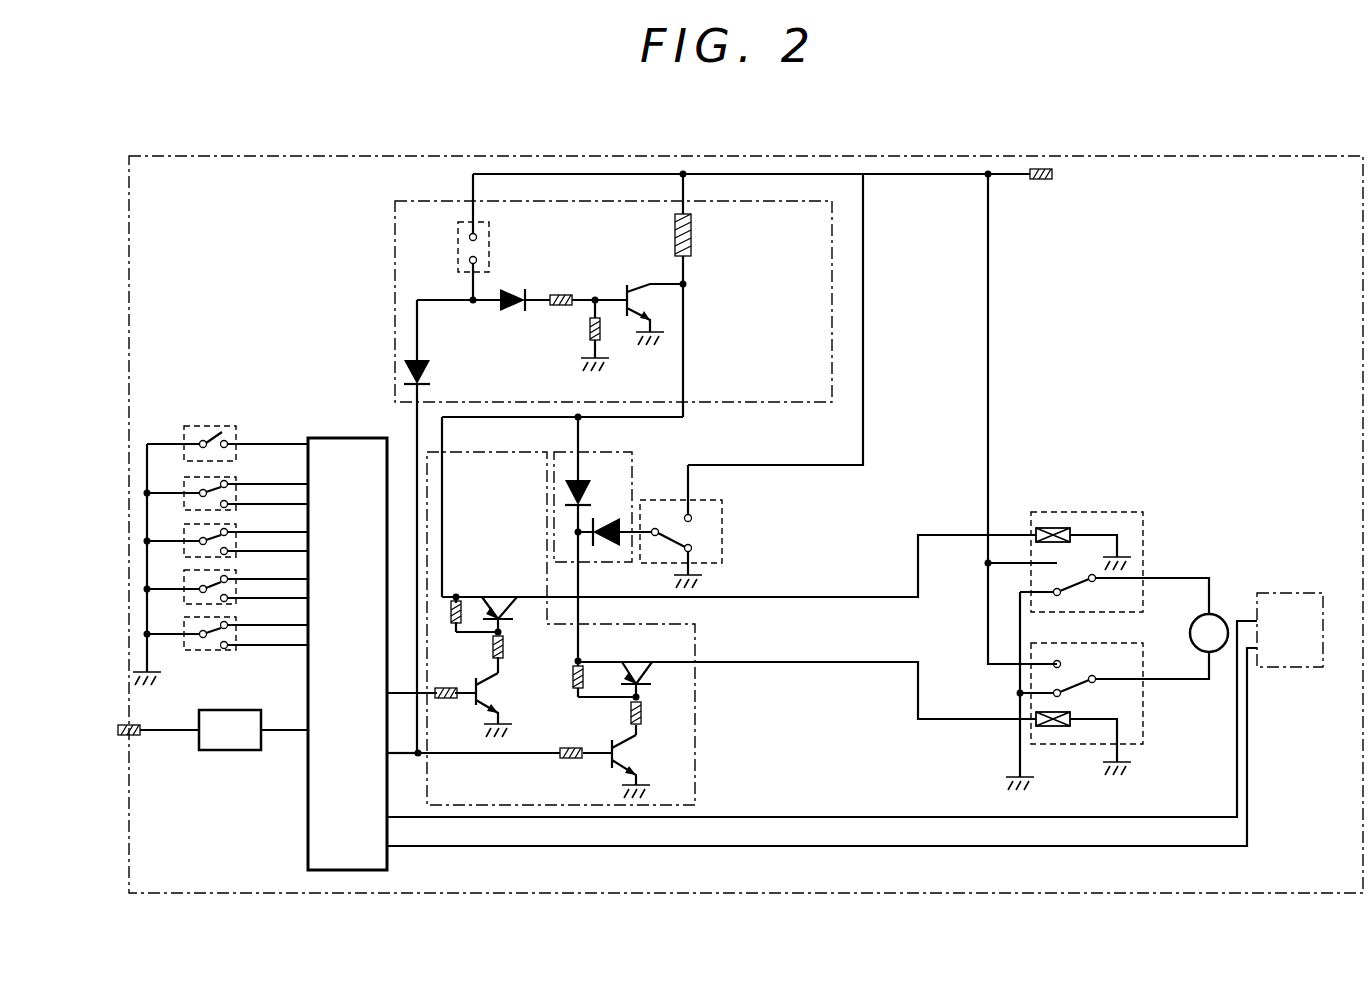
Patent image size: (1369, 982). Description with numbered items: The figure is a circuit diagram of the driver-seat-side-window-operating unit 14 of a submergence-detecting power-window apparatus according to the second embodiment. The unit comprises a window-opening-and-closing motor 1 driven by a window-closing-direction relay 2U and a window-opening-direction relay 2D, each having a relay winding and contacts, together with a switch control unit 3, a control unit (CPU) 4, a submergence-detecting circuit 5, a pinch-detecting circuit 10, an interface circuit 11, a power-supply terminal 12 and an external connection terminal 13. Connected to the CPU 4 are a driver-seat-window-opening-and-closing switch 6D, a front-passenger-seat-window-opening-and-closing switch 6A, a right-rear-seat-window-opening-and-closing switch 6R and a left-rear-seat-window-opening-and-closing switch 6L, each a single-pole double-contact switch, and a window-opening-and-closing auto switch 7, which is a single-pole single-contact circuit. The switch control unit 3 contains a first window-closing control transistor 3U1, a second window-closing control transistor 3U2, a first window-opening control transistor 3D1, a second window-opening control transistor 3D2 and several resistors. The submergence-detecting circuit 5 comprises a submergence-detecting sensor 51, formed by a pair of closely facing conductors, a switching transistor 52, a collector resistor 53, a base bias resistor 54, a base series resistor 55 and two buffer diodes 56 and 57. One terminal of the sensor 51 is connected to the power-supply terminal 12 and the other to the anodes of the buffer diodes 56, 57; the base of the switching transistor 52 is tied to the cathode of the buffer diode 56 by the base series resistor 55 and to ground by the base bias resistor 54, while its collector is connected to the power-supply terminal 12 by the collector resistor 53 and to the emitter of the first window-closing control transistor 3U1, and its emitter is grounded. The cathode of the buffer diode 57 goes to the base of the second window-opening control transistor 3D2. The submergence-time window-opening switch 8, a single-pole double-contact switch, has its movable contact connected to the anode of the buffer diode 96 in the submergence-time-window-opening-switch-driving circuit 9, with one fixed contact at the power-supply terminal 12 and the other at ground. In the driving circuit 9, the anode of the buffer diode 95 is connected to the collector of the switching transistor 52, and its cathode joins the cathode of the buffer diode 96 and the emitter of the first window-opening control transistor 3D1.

The window-opening-and-closing motor 1 is at (1194, 620).
The window-closing-direction relay 2U is at (1105, 512).
The window-opening-direction relay 2D is at (1075, 744).
The switch control unit 3 is at (694, 626).
The first window-closing control transistor 3U1 is at (490, 605).
The second window-closing control transistor 3U2 is at (500, 694).
The first window-opening control transistor 3D1 is at (633, 673).
The second window-opening control transistor 3D2 is at (623, 757).
The control unit (CPU) 4 is at (360, 438).
The submergence-detecting circuit 5 is at (762, 201).
The submergence-detecting sensor 51 is at (458, 244).
The switching transistor 52 is at (653, 300).
The collector resistor 53 is at (693, 232).
The base bias resistor 54 is at (590, 328).
The base series resistor 55 is at (556, 292).
The buffer diode 56 is at (512, 313).
The buffer diode 57 is at (430, 372).
The driver-seat-window-opening-and-closing switch 6D is at (228, 478).
The front-passenger-seat-window-opening-and-closing switch 6A is at (228, 526).
The right-rear-seat-window-opening-and-closing switch 6R is at (228, 574).
The left-rear-seat-window-opening-and-closing switch 6L is at (228, 620).
The window-opening-and-closing auto switch 7 is at (224, 426).
The submergence-time window-opening switch 8 is at (722, 505).
The submergence-time-window-opening-switch-driving circuit 9 is at (608, 539).
The buffer diode 95 is at (586, 490).
The buffer diode 96 is at (618, 512).
The pinch-detecting circuit 10 is at (1262, 593).
The interface circuit (I/F) 11 is at (240, 710).
The power-supply terminal 12 is at (1043, 181).
The external connection terminal 13 is at (137, 718).
The driver-seat-side-window-operating unit 14 is at (636, 156).